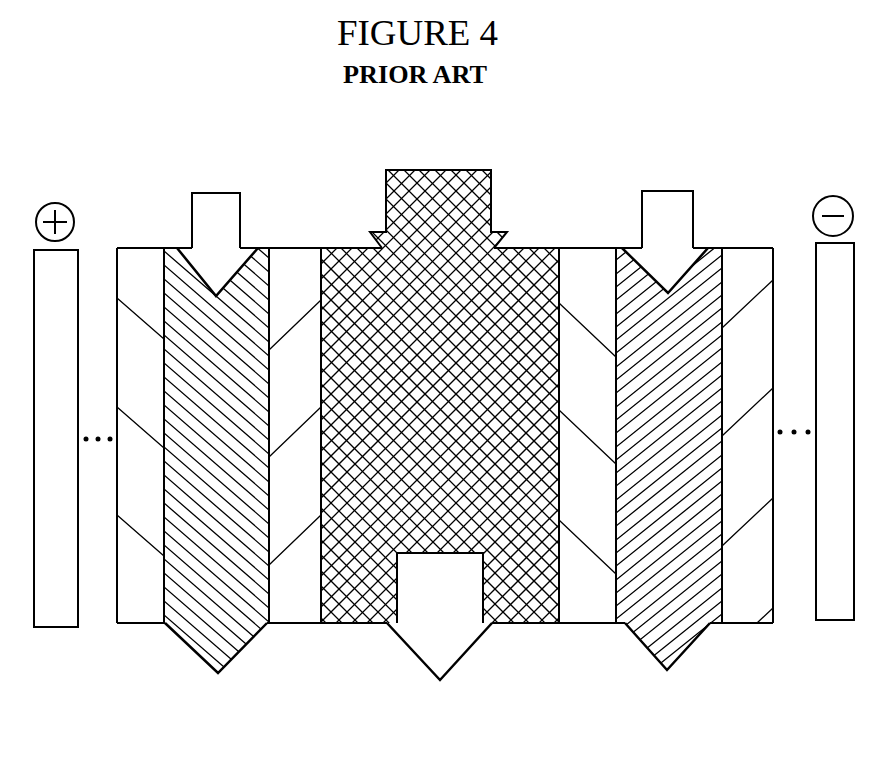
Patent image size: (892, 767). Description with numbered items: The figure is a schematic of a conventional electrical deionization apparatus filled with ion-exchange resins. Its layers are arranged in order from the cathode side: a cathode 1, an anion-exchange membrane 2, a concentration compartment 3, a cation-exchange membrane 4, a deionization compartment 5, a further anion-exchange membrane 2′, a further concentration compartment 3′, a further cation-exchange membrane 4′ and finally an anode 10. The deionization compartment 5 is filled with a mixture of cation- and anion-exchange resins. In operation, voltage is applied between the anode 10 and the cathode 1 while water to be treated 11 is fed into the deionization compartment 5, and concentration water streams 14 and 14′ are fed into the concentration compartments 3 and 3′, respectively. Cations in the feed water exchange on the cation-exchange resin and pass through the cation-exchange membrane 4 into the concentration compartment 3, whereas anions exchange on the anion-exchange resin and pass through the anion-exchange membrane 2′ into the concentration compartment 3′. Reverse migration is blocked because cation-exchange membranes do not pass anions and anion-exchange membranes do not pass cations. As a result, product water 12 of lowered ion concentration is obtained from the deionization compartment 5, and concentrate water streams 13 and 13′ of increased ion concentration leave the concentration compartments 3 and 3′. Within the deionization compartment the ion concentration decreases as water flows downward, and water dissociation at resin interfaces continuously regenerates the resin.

The cathode 1 is at (837, 619).
The anode 10 is at (58, 627).
The anion-exchange membrane 2 is at (748, 605).
The anion-exchange membrane 2′ is at (295, 617).
The concentration compartment 3 is at (683, 593).
The concentration compartment 3′ is at (238, 627).
The cation-exchange membrane 4 is at (590, 595).
The cation-exchange membrane 4′ is at (140, 618).
The deionization compartment 5 is at (438, 530).
The water to be treated 11 is at (453, 170).
The product water 12 is at (452, 670).
The concentrate water stream 13 is at (645, 650).
The concentrate water stream 13′ is at (209, 668).
The concentration water stream 14 is at (658, 192).
The concentration water stream 14′ is at (212, 207).